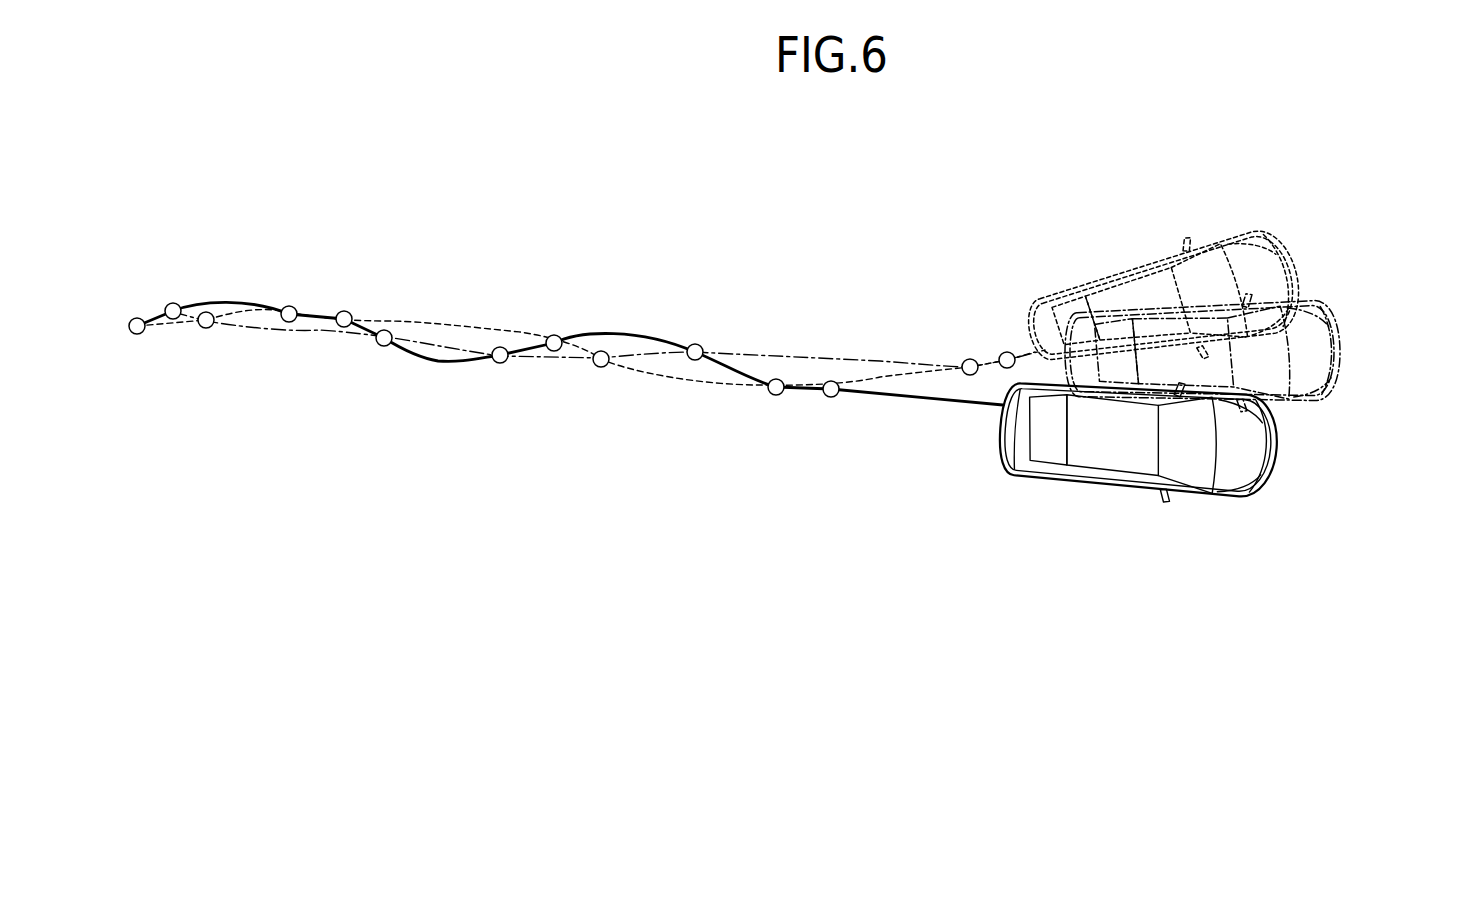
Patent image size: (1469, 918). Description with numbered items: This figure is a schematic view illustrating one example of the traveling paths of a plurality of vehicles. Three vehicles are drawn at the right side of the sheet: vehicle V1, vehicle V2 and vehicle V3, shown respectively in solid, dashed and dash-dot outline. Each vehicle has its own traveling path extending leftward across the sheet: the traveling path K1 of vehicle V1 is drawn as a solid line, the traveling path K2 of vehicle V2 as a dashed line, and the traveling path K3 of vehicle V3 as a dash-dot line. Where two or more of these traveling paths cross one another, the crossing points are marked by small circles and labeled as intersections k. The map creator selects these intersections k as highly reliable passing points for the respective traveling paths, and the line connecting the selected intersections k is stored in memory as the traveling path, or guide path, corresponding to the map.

The intersection k is at (351, 312).
The traveling path of vehicle V1 K1 is at (875, 402).
The traveling path of vehicle V2 K2 is at (870, 382).
The traveling path of vehicle V3 K3 is at (788, 353).
The vehicle V1 is at (1280, 447).
The vehicle V2 is at (1280, 241).
The vehicle V3 is at (1330, 323).